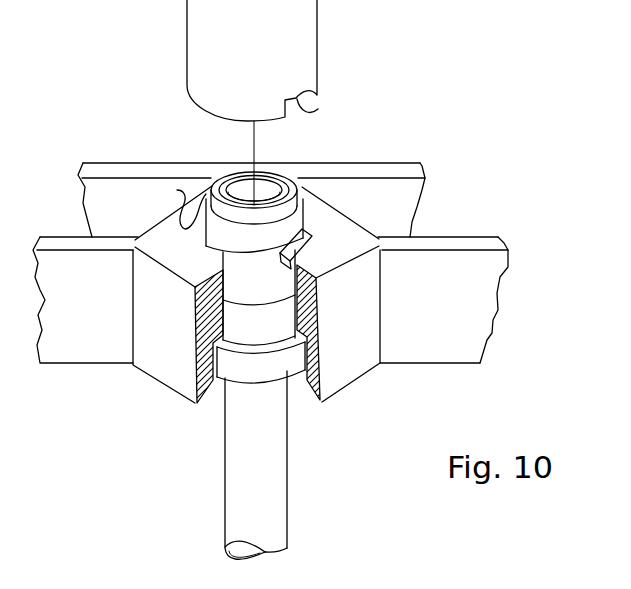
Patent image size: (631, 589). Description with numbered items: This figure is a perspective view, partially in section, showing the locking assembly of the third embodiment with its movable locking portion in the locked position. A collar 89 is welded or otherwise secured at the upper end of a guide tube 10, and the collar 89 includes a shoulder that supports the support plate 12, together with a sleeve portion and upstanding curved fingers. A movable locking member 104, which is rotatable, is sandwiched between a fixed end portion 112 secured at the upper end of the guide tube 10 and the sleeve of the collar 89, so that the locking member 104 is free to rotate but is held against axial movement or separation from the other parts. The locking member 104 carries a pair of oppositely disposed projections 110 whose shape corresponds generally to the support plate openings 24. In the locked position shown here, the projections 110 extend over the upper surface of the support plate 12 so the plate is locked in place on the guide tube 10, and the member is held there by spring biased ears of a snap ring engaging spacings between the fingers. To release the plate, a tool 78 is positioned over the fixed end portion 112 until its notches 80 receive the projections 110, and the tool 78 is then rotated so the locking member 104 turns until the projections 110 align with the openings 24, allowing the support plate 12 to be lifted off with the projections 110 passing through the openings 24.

The guide tube 10 is at (274, 487).
The support plate 12 is at (347, 367).
The support plate openings 24 is at (192, 278).
The tool 78 is at (303, 15).
The notches 80 is at (318, 109).
The collar 89 is at (272, 321).
The movable locking member 104 is at (248, 269).
The projections 110 is at (177, 190).
The fixed end portion 112 is at (310, 209).